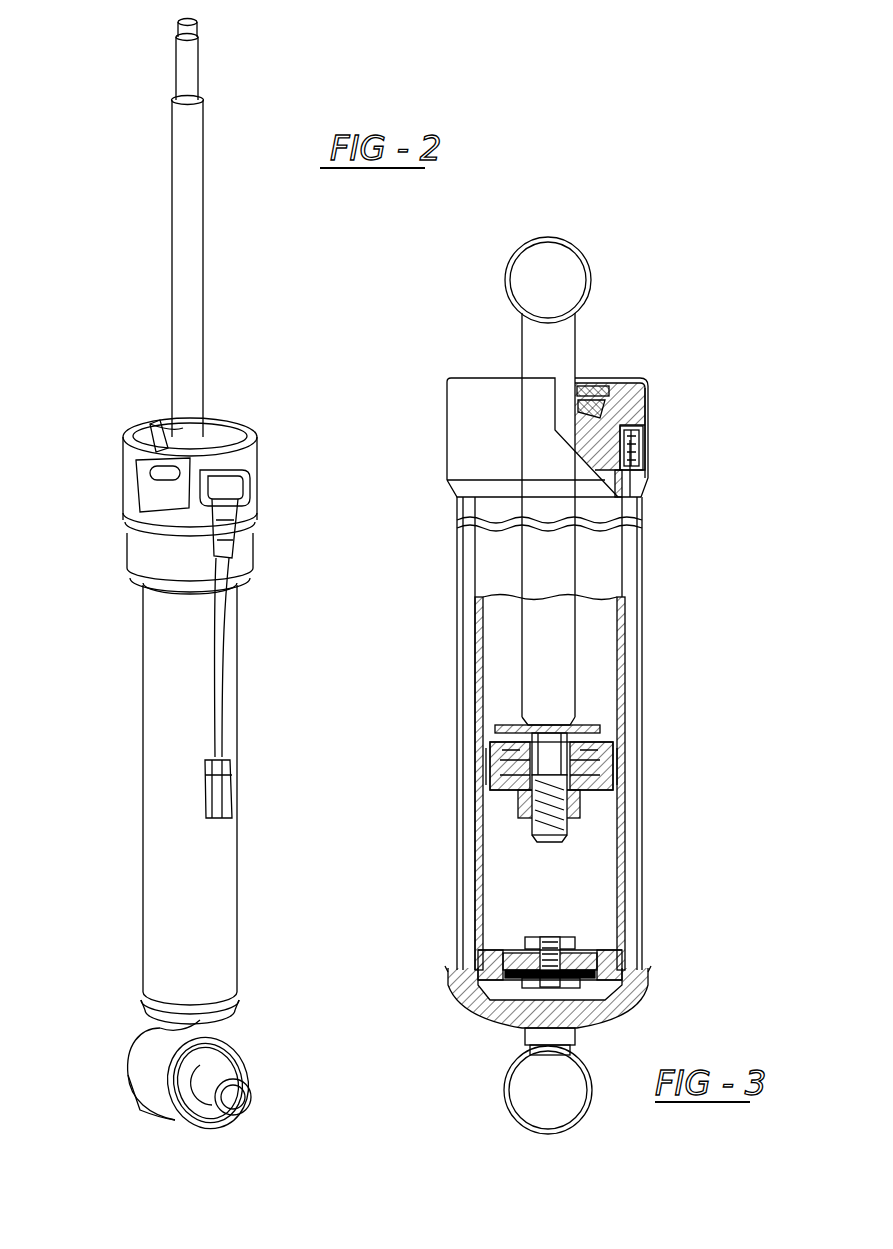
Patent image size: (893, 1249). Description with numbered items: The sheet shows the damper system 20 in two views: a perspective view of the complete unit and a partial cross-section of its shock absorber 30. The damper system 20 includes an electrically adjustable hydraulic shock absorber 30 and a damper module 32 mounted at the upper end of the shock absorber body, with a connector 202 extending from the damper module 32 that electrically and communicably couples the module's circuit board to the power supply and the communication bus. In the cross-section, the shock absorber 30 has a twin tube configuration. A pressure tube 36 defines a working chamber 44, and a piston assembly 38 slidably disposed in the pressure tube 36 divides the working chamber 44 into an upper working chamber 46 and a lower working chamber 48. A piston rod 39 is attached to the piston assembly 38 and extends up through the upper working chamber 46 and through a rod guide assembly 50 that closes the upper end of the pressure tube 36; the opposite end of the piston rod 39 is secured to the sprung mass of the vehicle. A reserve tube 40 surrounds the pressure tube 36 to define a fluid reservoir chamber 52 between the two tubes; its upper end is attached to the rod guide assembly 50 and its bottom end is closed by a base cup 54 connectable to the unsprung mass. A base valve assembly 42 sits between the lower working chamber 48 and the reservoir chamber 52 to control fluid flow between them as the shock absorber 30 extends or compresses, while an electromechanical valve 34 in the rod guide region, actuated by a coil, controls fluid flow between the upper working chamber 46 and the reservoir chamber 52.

In FIG. 2, the damper system 20 is at (88, 234).
In FIG. 2, the shock absorber 30 is at (143, 758).
In FIG. 3, the shock absorber 30 is at (652, 324).
In FIG. 2, the damper module 32 is at (130, 482).
In FIG. 2, the connector 202 is at (237, 508).
In FIG. 3, the rod guide assembly 50 is at (633, 393).
In FIG. 3, the electromechanical valve 34 is at (658, 438).
In FIG. 3, the pressure tube 36 is at (620, 612).
In FIG. 3, the piston rod 39 is at (543, 657).
In FIG. 3, the upper working chamber 46 is at (590, 667).
In FIG. 3, the piston assembly 38 is at (620, 758).
In FIG. 3, the reserve tube 40 is at (640, 818).
In FIG. 3, the base valve assembly 42 is at (607, 964).
In FIG. 3, the fluid reservoir chamber 52 is at (470, 634).
In FIG. 3, the lower working chamber 48 is at (505, 838).
In FIG. 3, the working chamber 44 is at (543, 887).
In FIG. 3, the base cup 54 is at (483, 996).